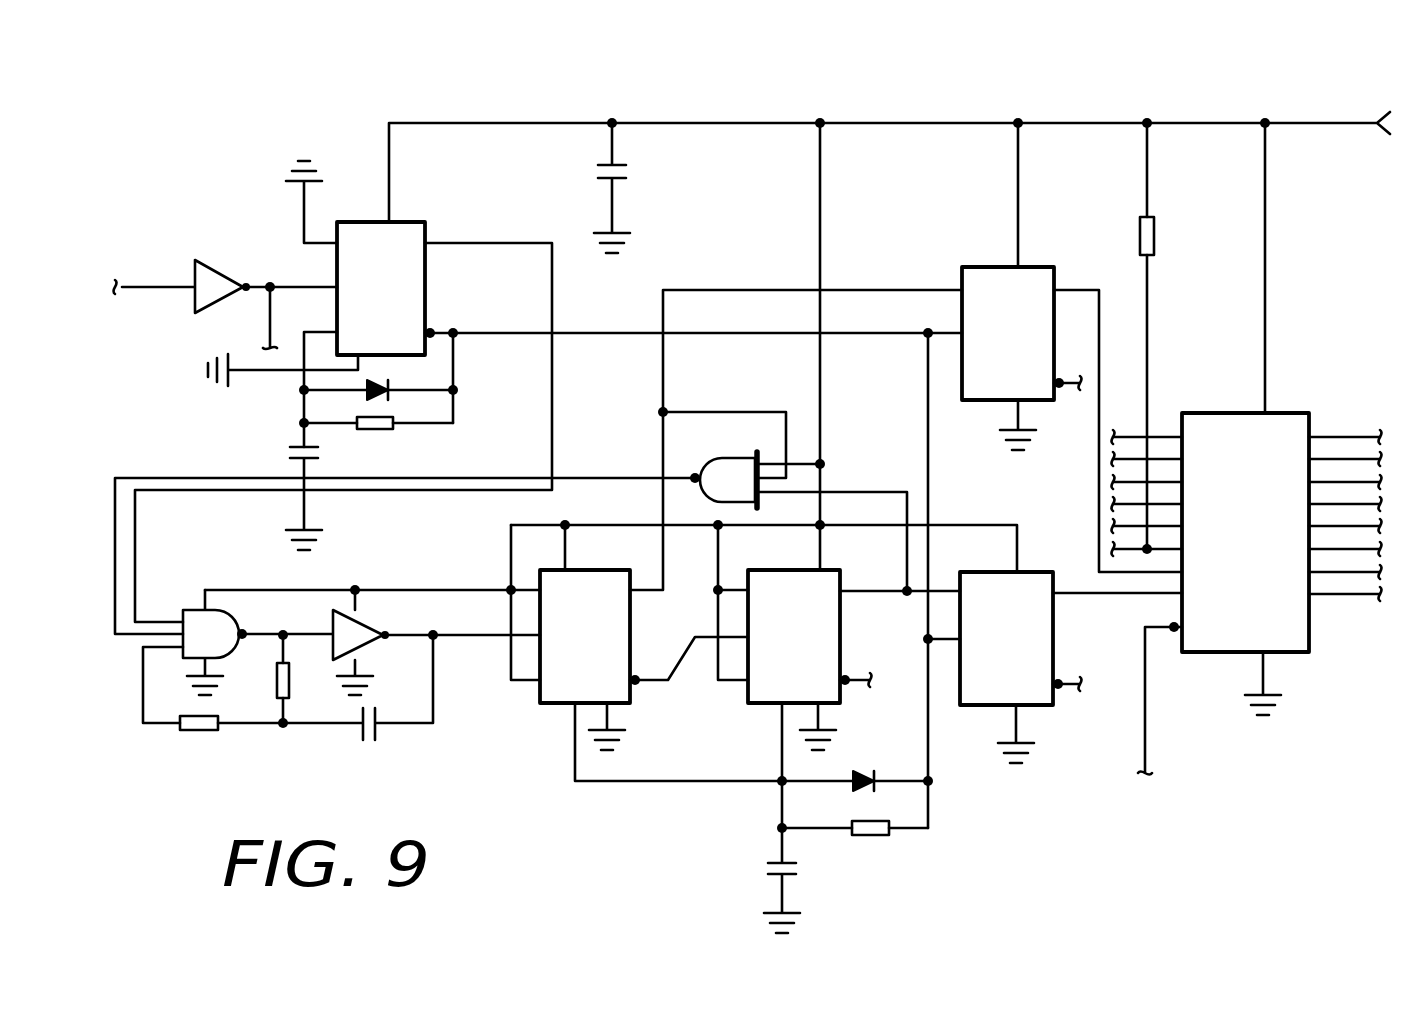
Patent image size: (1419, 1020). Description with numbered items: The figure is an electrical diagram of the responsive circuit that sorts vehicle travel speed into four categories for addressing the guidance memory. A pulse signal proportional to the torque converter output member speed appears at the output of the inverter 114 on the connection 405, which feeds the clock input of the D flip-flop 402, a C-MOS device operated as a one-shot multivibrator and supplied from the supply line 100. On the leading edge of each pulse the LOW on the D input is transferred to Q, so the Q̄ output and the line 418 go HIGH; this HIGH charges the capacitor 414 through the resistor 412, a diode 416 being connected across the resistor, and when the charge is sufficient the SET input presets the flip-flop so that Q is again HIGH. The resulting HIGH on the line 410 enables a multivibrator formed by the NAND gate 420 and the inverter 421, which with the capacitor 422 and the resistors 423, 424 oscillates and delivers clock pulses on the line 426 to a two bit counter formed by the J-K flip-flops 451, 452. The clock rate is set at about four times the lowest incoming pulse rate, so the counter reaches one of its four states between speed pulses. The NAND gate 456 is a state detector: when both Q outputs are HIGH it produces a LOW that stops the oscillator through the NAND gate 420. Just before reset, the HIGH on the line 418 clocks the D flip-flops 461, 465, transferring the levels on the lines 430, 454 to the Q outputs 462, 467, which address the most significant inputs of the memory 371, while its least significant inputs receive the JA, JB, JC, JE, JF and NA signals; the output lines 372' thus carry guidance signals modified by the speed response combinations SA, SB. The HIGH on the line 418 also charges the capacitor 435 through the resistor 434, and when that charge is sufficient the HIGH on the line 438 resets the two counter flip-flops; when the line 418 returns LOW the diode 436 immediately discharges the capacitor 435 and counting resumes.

The power supply line 100 is at (1168, 121).
The inverter 114 is at (212, 282).
The D flip-flop 402 is at (402, 244).
The connection 405 is at (281, 270).
The line 410 is at (528, 243).
The resistor 412 is at (393, 430).
The capacitor 414 is at (280, 443).
The diode 416 is at (388, 383).
The line 418 is at (472, 332).
The NAND gate 420 is at (204, 620).
The inverter 421 is at (360, 630).
The capacitor 422 is at (378, 746).
The resistor 423 is at (288, 694).
The resistor 424 is at (195, 732).
The line 426 is at (477, 640).
The line 430 is at (883, 290).
The resistor 434 is at (878, 837).
The capacitor 435 is at (757, 858).
The diode 436 is at (877, 772).
The line 438 is at (665, 780).
The J-K flip-flop 451 is at (596, 601).
The J-K flip-flop 452 is at (787, 605).
The line 454 is at (882, 590).
The NAND gate 456 is at (726, 459).
The D flip-flop 461 is at (1023, 288).
The Q output 462 is at (1100, 333).
The D flip-flop 465 is at (1020, 590).
The Q output 467 is at (1102, 597).
The memory 371 is at (1230, 423).
The output lines 372' is at (1347, 486).